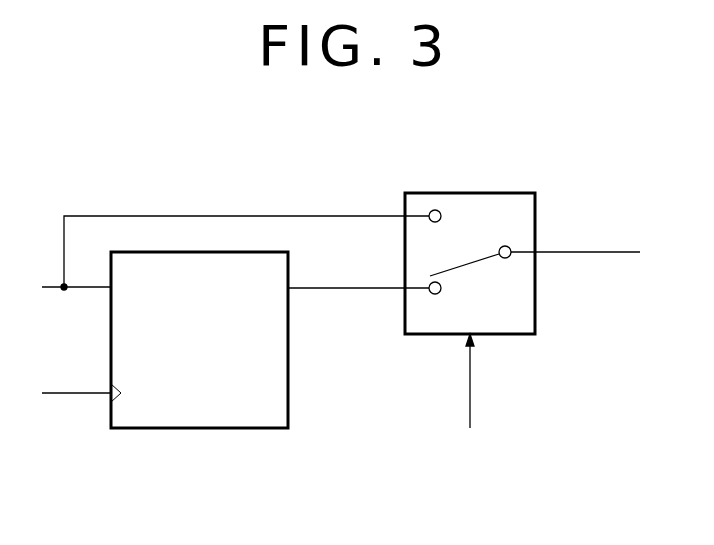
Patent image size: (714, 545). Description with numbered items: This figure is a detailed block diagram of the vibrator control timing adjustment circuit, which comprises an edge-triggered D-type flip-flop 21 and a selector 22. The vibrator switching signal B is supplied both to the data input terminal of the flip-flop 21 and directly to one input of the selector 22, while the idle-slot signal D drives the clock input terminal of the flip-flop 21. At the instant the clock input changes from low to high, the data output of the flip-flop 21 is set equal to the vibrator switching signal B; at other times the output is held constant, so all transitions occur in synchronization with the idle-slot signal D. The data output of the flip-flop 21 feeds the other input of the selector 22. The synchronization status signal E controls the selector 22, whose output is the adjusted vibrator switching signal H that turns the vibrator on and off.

The edge-triggered D-type flip-flop 21 is at (227, 429).
The selector 22 is at (463, 193).
The vibrator switching signal B is at (235, 269).
The idle-slot signal D is at (76, 410).
The synchronization status signal E is at (480, 381).
The adjusted vibrator switching signal H is at (575, 237).